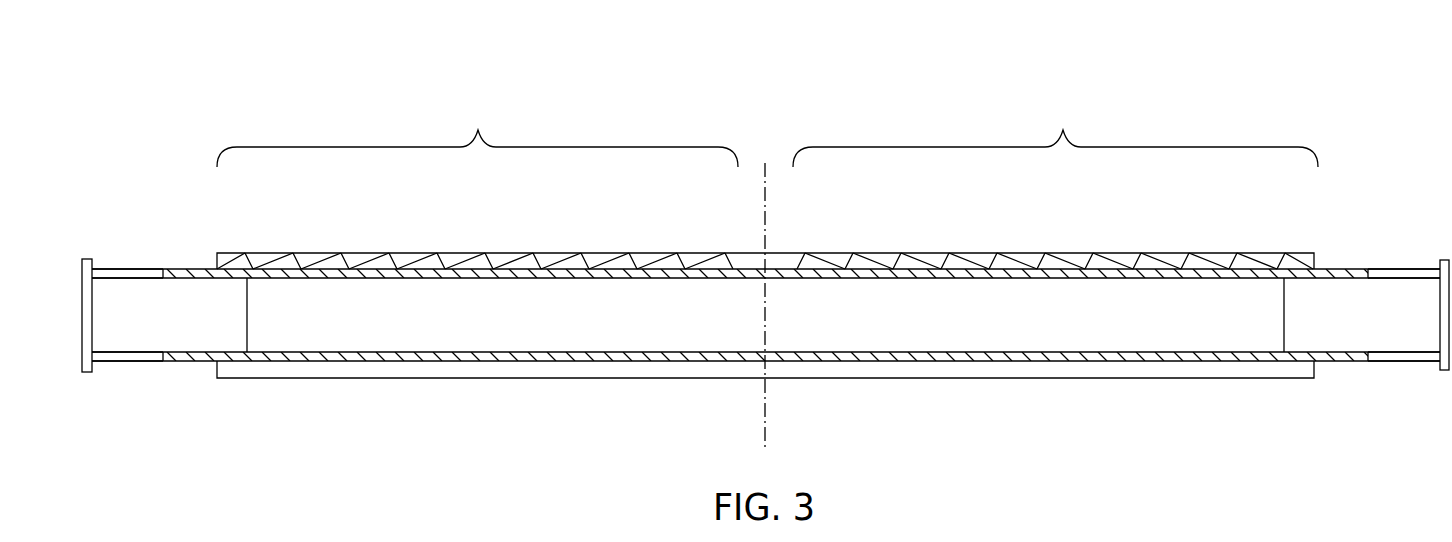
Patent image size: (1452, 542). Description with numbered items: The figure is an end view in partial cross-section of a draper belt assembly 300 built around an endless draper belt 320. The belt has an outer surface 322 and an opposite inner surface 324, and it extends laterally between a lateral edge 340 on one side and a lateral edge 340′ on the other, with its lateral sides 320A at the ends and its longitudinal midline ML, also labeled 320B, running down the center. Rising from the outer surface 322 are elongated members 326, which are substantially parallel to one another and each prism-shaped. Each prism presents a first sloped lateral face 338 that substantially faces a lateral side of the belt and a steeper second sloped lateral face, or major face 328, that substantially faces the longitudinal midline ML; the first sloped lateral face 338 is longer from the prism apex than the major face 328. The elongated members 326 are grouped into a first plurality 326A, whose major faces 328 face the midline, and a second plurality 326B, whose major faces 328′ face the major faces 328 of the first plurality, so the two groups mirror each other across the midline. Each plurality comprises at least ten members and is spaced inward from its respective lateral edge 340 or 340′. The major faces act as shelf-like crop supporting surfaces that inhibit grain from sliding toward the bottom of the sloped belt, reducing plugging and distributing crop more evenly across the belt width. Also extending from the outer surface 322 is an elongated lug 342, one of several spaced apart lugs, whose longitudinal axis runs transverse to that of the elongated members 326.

The draper belt assembly 300 is at (992, 97).
The endless draper belt 320 is at (1345, 256).
The lateral side of the draper belt 320A is at (138, 165).
The longitudinal midline 320B is at (760, 120).
The outer surface 322 is at (181, 266).
The inner surface 324 is at (150, 280).
The elongated members 326 is at (254, 250).
The first plurality of prism-shaped elongated members 326A is at (477, 130).
The second plurality of prism-shaped elongated members 326B is at (1055, 130).
The major face 328 is at (290, 258).
The major face of the second plurality 328′ is at (950, 260).
The first sloped lateral face 338 is at (236, 262).
The lateral edge 340 is at (88, 258).
The lateral edge 340′ is at (1438, 368).
The elongated lug 342 is at (750, 252).
The longitudinal midline ML is at (768, 195).